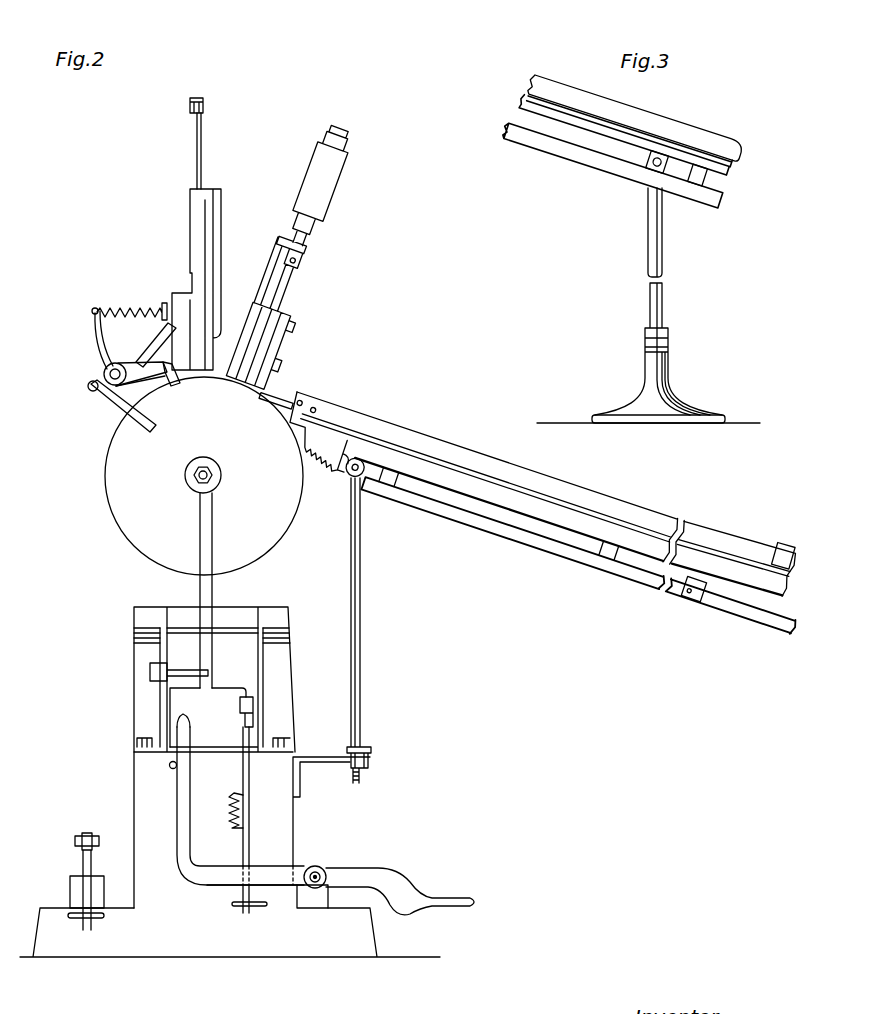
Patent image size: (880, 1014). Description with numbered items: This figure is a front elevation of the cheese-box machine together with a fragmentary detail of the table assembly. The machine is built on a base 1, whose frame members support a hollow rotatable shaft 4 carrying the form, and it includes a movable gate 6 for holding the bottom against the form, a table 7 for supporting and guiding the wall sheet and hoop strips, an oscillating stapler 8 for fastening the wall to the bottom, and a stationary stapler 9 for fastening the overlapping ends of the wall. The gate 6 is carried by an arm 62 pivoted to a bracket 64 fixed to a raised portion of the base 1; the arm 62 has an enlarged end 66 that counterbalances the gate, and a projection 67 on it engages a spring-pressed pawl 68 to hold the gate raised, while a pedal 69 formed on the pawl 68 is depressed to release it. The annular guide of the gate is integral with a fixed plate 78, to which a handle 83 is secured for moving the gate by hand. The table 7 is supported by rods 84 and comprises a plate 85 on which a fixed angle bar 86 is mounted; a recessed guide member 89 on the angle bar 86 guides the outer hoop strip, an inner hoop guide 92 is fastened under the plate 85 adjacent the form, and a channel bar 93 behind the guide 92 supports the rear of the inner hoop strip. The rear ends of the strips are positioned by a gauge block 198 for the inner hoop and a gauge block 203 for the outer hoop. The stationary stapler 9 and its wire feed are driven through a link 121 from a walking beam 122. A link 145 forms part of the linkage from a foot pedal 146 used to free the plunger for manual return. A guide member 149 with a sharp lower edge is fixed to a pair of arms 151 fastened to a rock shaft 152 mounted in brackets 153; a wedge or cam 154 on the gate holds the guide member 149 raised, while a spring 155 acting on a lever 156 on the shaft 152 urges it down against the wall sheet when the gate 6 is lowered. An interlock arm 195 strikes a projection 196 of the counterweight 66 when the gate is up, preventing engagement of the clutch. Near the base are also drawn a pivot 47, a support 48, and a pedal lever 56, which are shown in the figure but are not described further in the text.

In FIG. 2, the base 1 is at (147, 932).
In FIG. 2, the hollow rotatable shaft 4 is at (277, 999).
In FIG. 2, the movable gate 6 is at (176, 476).
In FIG. 2, the table 7 is at (541, 517).
In FIG. 3, the table 7 is at (608, 122).
In FIG. 2, the oscillating stapler 8 is at (307, 318).
In FIG. 2, the stationary stapler 9 is at (184, 291).
In FIG. 2, the pivot 47 is at (325, 866).
In FIG. 2, the support bracket 48 is at (313, 899).
In FIG. 2, the pedal lever 56 is at (395, 882).
In FIG. 2, the arm 62 is at (203, 583).
In FIG. 2, the bracket 64 is at (140, 653).
In FIG. 2, the enlarged end 66 is at (187, 698).
In FIG. 2, the projection 67 is at (247, 702).
In FIG. 2, the spring-pressed pawl 68 is at (243, 807).
In FIG. 2, the pedal 69 is at (180, 670).
In FIG. 2, the fixed plate 78 is at (138, 512).
In FIG. 2, the handle 83 is at (92, 392).
In FIG. 2, the rods 84 is at (362, 627).
In FIG. 3, the rods 84 is at (663, 254).
In FIG. 2, the plate 85 is at (566, 534).
In FIG. 3, the plate 85 is at (623, 142).
In FIG. 2, the fixed angle bar 86 is at (531, 523).
In FIG. 3, the fixed angle bar 86 is at (635, 118).
In FIG. 2, the recessed guide member 89 is at (284, 396).
In FIG. 2, the inner hoop guide 92 is at (336, 440).
In FIG. 2, the channel bar 93 is at (579, 555).
In FIG. 3, the channel bar 93 is at (612, 165).
In FIG. 2, the link 121 is at (196, 137).
In FIG. 2, the walking beam 122 is at (192, 98).
In FIG. 2, the link 145 is at (95, 832).
In FIG. 2, the foot pedal 146 is at (78, 920).
In FIG. 2, the guide member 149 is at (152, 380).
In FIG. 2, the arms 151 is at (142, 377).
In FIG. 2, the rock shaft 152 is at (104, 374).
In FIG. 2, the brackets 153 is at (160, 326).
In FIG. 2, the wedge or cam 154 is at (171, 382).
In FIG. 2, the spring 155 is at (143, 309).
In FIG. 2, the lever 156 is at (93, 334).
In FIG. 2, the arm 195 is at (180, 789).
In FIG. 2, the projection 196 is at (178, 714).
In FIG. 2, the gauge block 198 is at (693, 588).
In FIG. 2, the gauge block 203 is at (783, 556).